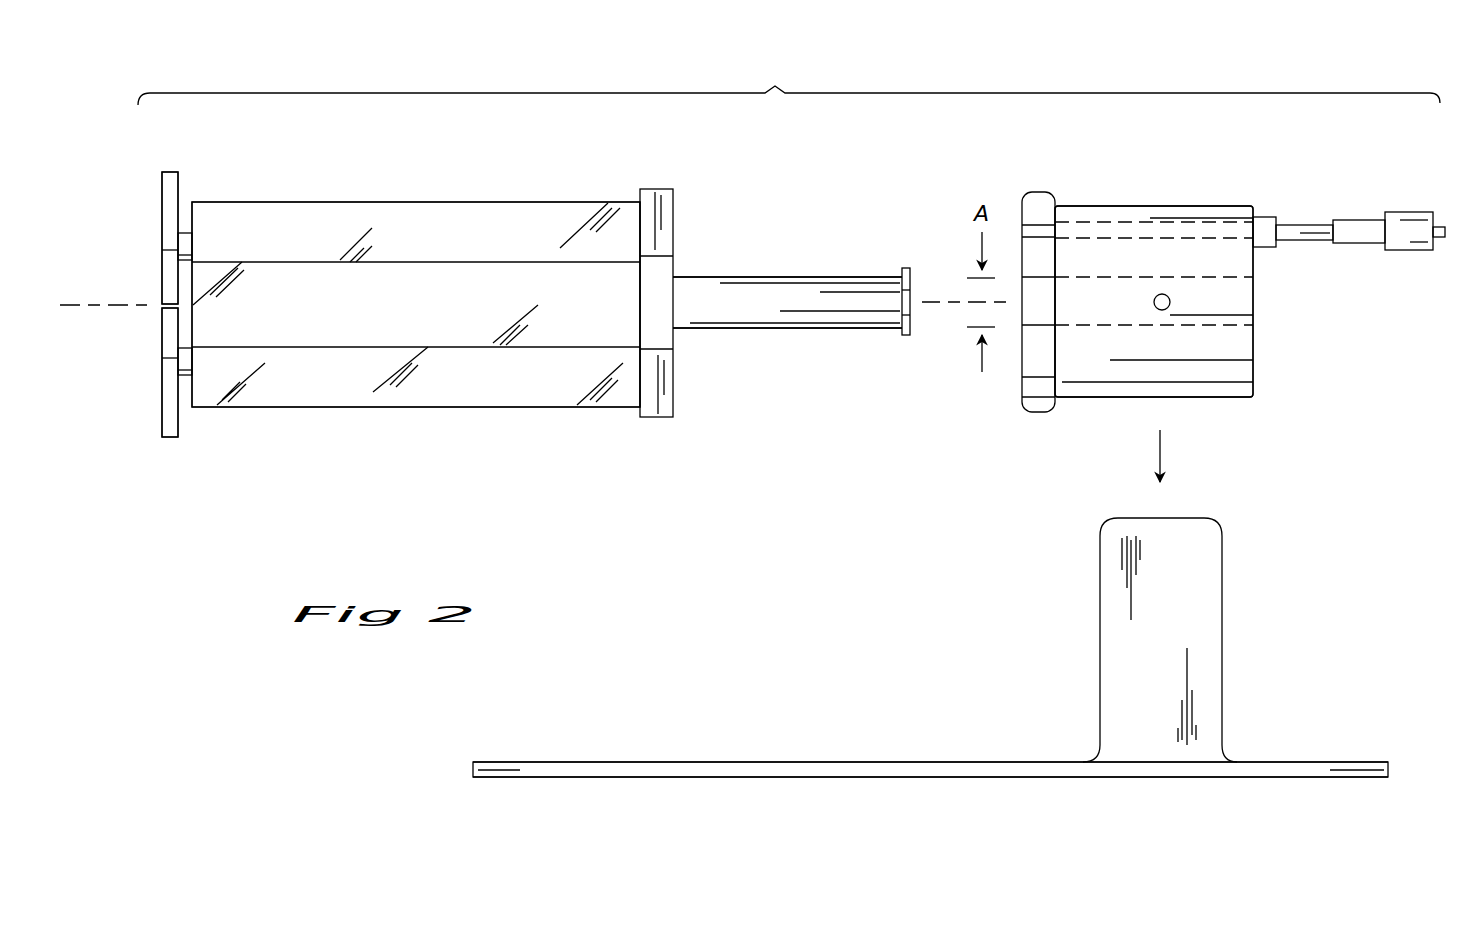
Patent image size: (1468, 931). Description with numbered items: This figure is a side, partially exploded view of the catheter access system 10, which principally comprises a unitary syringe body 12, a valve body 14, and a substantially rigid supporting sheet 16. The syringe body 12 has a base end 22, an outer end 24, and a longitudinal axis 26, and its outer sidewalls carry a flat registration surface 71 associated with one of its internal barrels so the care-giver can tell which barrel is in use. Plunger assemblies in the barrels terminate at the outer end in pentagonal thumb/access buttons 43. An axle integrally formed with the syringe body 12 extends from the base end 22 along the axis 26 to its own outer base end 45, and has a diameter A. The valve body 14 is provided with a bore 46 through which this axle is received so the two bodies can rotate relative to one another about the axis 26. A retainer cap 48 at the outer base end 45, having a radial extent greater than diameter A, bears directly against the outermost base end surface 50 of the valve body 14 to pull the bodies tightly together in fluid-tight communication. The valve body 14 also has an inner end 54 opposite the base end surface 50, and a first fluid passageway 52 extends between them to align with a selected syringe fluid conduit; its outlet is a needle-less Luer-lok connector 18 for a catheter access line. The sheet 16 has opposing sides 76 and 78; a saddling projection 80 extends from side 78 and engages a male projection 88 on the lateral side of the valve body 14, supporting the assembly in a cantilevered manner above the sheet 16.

The catheter access system 10 is at (250, 46).
The syringe body 12 is at (370, 202).
The valve body 14 is at (1155, 206).
The rigid supporting sheet 16 is at (635, 765).
The Luer-lok connector 18 is at (1350, 228).
The base end 22 is at (805, 180).
The outer end 24 is at (202, 170).
The longitudinal axis 26 is at (132, 305).
The thumb/access button 43 is at (170, 233).
The outer base end 45 is at (893, 343).
The bore 46 is at (1213, 298).
The retainer cap 48 is at (910, 278).
The outermost base end surface 50 is at (1255, 368).
The first fluid passageway 52 is at (1195, 230).
The inner end 54 is at (1016, 384).
The flat registration surface 71 is at (441, 323).
The side of sheet 76 is at (740, 778).
The side of sheet 78 is at (843, 760).
The saddling projection 80 is at (1186, 600).
The male projection 88 is at (1153, 302).